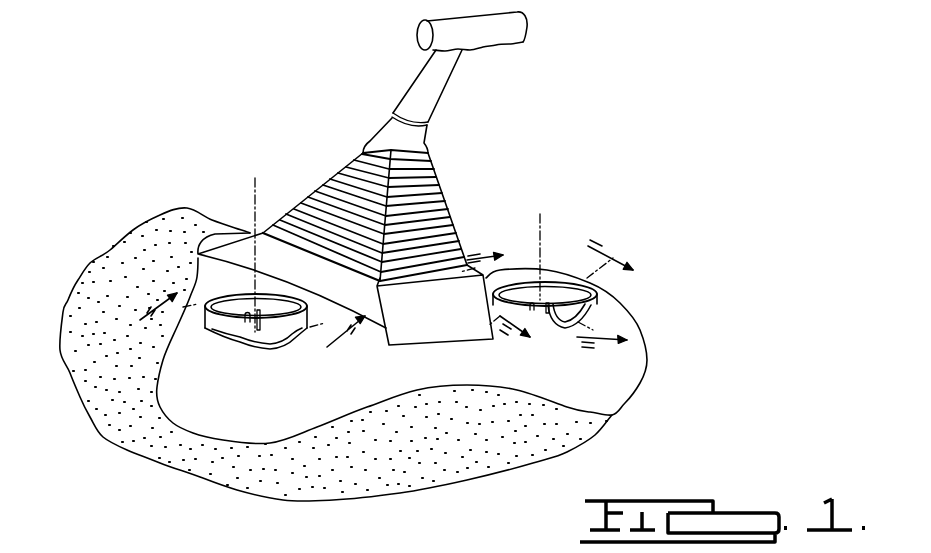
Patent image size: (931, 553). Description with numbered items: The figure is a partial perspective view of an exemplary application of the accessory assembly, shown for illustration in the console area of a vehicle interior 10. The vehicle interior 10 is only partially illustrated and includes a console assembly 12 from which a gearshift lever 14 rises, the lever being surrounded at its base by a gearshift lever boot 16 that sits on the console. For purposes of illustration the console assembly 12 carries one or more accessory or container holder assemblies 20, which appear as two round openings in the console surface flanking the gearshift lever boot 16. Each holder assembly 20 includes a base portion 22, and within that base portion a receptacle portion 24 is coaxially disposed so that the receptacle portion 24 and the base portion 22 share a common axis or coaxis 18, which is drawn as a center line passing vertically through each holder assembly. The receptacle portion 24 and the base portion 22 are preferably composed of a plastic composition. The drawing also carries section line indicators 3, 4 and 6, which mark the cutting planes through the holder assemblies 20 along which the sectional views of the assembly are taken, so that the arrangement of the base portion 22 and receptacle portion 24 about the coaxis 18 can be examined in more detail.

The vehicle interior 10 is at (628, 132).
The console assembly 12 is at (193, 403).
The gearshift lever 14 is at (423, 70).
The gearshift lever boot 16 is at (432, 183).
The common axis or coaxis 18 is at (543, 220).
The accessory or container holder assembly 20 is at (227, 331).
The base portion 22 is at (300, 336).
The receptacle portion 24 is at (243, 331).
The section line 3- 3 is at (247, 323).
The section line 4- 4 is at (563, 295).
The section line 6- 6 is at (543, 303).